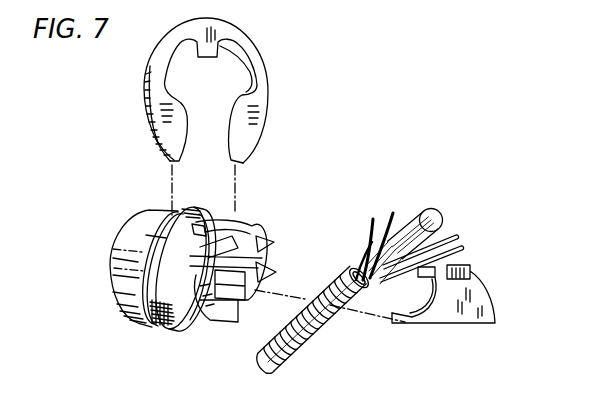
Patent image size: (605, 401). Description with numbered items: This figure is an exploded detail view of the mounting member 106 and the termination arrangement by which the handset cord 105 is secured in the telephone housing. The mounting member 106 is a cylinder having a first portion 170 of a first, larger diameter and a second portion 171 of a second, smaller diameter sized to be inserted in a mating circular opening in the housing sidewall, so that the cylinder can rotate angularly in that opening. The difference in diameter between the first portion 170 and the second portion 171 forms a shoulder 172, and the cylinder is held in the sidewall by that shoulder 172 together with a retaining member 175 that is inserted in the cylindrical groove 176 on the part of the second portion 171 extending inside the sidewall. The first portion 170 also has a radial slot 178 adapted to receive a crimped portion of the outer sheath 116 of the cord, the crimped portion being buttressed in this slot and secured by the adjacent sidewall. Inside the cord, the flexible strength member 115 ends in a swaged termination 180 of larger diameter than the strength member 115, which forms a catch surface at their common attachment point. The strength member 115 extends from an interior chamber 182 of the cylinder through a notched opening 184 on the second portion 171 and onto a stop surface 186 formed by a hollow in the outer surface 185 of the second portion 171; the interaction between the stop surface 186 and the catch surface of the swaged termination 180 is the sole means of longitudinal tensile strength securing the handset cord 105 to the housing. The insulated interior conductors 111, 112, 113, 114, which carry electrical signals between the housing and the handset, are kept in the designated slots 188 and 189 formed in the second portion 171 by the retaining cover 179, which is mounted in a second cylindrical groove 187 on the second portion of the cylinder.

The handset cord 105 is at (318, 314).
The mounting member 106 is at (112, 258).
The insulated interior conductor 111 is at (368, 252).
The insulated interior conductor 112 is at (391, 234).
The insulated interior conductor 113 is at (464, 246).
The insulated interior conductor 114 is at (450, 229).
The strength member 115 is at (375, 295).
The outer sheath 116 is at (354, 266).
The first portion 170 is at (118, 288).
The second portion 171 is at (150, 324).
The shoulder 172 is at (217, 233).
The retaining member 175 is at (264, 88).
The cylindrical groove 176 is at (168, 236).
The radial slot 178 is at (202, 324).
The retaining cover 179 is at (484, 290).
The swaged termination 180 is at (424, 204).
The interior chamber 182 is at (236, 306).
The notched opening 184 is at (256, 292).
The outer surface 185 is at (191, 229).
The stop surface 186 is at (245, 230).
The second cylindrical groove 187 is at (260, 247).
The designated slot 188 is at (140, 238).
The designated slot 189 is at (347, 261).